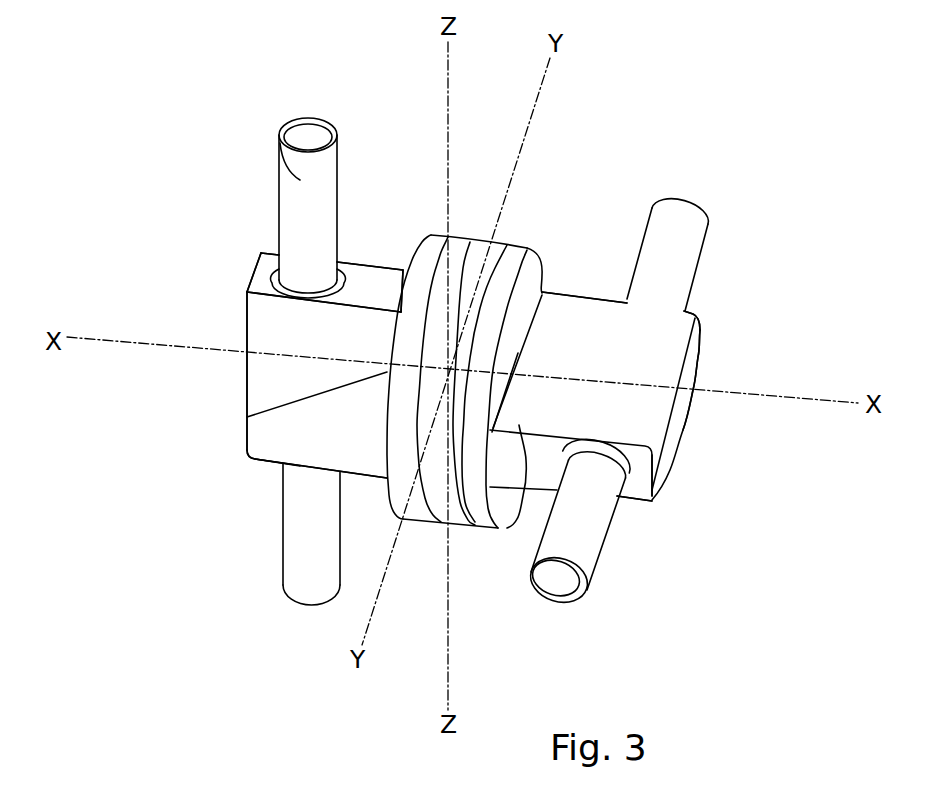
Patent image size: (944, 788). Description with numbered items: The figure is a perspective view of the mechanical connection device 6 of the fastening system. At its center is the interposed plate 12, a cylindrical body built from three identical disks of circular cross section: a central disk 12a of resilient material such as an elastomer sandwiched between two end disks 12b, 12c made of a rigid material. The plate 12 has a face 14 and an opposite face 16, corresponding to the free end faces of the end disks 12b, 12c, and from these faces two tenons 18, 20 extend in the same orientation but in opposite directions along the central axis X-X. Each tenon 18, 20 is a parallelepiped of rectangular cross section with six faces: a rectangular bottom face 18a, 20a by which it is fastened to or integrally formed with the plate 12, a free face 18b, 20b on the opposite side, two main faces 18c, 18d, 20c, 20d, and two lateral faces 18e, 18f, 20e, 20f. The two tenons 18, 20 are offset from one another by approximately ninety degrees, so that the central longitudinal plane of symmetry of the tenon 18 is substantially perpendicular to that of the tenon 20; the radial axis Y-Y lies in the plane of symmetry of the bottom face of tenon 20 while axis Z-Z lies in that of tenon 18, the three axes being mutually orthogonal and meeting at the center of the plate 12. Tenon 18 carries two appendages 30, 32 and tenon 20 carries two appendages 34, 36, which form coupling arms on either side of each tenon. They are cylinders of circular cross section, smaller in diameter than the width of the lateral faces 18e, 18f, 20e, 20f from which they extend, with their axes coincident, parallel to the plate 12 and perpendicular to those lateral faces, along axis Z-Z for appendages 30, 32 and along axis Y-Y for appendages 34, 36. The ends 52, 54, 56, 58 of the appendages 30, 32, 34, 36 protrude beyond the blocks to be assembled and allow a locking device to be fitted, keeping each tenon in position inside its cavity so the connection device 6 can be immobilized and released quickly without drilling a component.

The mechanical connection device 6 is at (603, 204).
The interposed plate 12 is at (428, 240).
The central disk 12a is at (442, 497).
The end disk 12b is at (401, 442).
The end disk 12c is at (470, 453).
The face 14 is at (277, 428).
The opposite face 16 is at (535, 287).
The tenon 18 is at (270, 330).
The bottom face 18a is at (398, 272).
The free face 18b is at (245, 377).
The main face 18c is at (380, 267).
The main face 18d is at (277, 428).
The lateral face 18e is at (252, 280).
The lateral face 18f is at (272, 467).
The tenon 20 is at (633, 360).
The bottom face 20a is at (519, 425).
The free face 20b is at (672, 425).
The main face 20c is at (640, 503).
The main face 20d is at (563, 318).
The lateral face 20e is at (698, 317).
The lateral face 20f is at (652, 502).
The appendage 30 is at (295, 240).
The appendage 32 is at (297, 517).
The appendage 34 is at (684, 244).
The appendage 36 is at (590, 522).
The end of appendage 52 is at (278, 160).
The end of appendage 54 is at (310, 553).
The end of appendage 56 is at (682, 217).
The end of appendage 58 is at (575, 538).